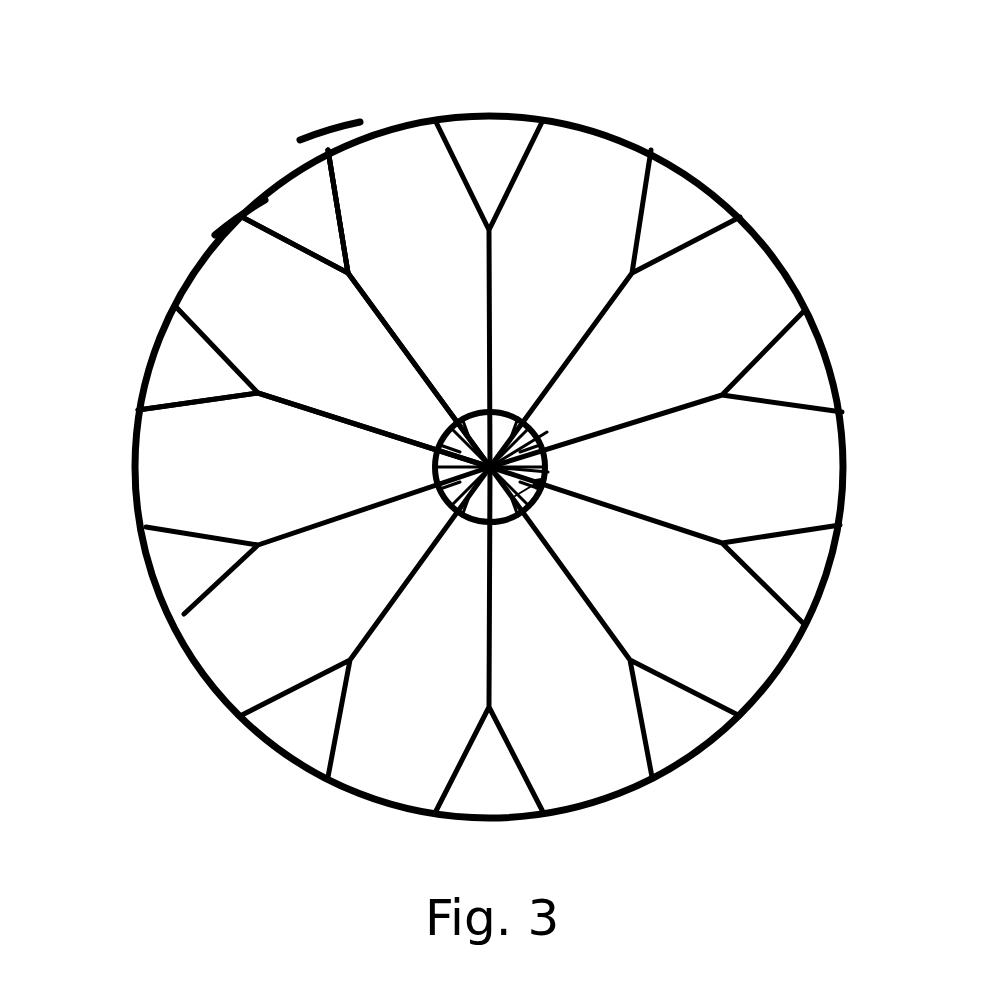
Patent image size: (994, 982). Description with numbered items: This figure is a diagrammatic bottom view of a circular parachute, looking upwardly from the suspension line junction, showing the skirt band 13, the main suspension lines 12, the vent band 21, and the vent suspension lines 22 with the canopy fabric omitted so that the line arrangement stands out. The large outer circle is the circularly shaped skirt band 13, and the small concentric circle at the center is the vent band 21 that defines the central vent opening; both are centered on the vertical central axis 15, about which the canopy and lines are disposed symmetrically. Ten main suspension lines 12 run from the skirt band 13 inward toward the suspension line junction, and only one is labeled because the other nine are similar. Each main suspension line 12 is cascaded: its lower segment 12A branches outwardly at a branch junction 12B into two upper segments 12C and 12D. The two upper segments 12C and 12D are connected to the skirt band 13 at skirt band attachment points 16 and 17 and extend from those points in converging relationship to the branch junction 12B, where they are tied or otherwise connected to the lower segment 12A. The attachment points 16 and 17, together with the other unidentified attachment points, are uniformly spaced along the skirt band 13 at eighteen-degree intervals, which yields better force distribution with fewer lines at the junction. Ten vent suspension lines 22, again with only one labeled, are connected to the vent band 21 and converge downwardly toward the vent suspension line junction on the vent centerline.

The main suspension line 12 is at (377, 318).
The lower segment 12A is at (446, 400).
The branch junction 12B is at (344, 275).
The upper segment 12C is at (290, 244).
The upper segment 12D is at (345, 207).
The skirt band 13 is at (476, 115).
The vertical central axis 15 is at (512, 405).
The skirt band attachment point 16 is at (242, 215).
The skirt band attachment point 17 is at (330, 153).
The vent band 21 is at (547, 432).
The vent suspension line 22 is at (548, 472).